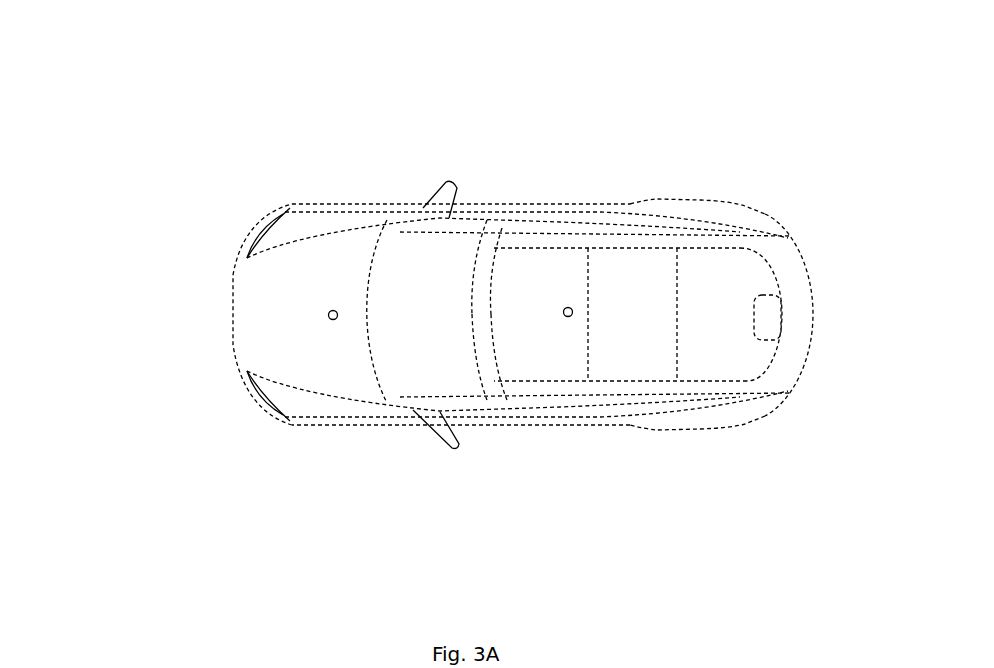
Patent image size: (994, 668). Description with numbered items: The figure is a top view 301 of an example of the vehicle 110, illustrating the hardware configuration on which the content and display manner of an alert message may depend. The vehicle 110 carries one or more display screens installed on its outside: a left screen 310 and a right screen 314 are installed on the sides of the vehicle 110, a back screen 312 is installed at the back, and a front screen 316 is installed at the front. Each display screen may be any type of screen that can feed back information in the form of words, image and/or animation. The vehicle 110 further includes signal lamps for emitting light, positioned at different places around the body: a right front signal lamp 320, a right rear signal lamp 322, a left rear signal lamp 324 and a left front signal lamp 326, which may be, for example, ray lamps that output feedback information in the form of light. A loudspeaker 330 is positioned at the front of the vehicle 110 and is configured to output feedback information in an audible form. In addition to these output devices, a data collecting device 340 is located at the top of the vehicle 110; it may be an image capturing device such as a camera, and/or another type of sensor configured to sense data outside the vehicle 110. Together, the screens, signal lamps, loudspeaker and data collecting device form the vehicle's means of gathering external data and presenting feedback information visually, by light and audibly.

The top view 301 is at (201, 64).
The vehicle 110 is at (800, 267).
The left screen 310 is at (476, 220).
The back screen 312 is at (790, 313).
The right screen 314 is at (502, 405).
The front screen 316 is at (258, 310).
The right front signal lamp 320 is at (285, 212).
The right rear signal lamp 322 is at (761, 222).
The left rear signal lamp 324 is at (757, 405).
The left front signal lamp 326 is at (290, 405).
The loudspeaker 330 is at (331, 305).
The data collecting device 340 is at (545, 310).